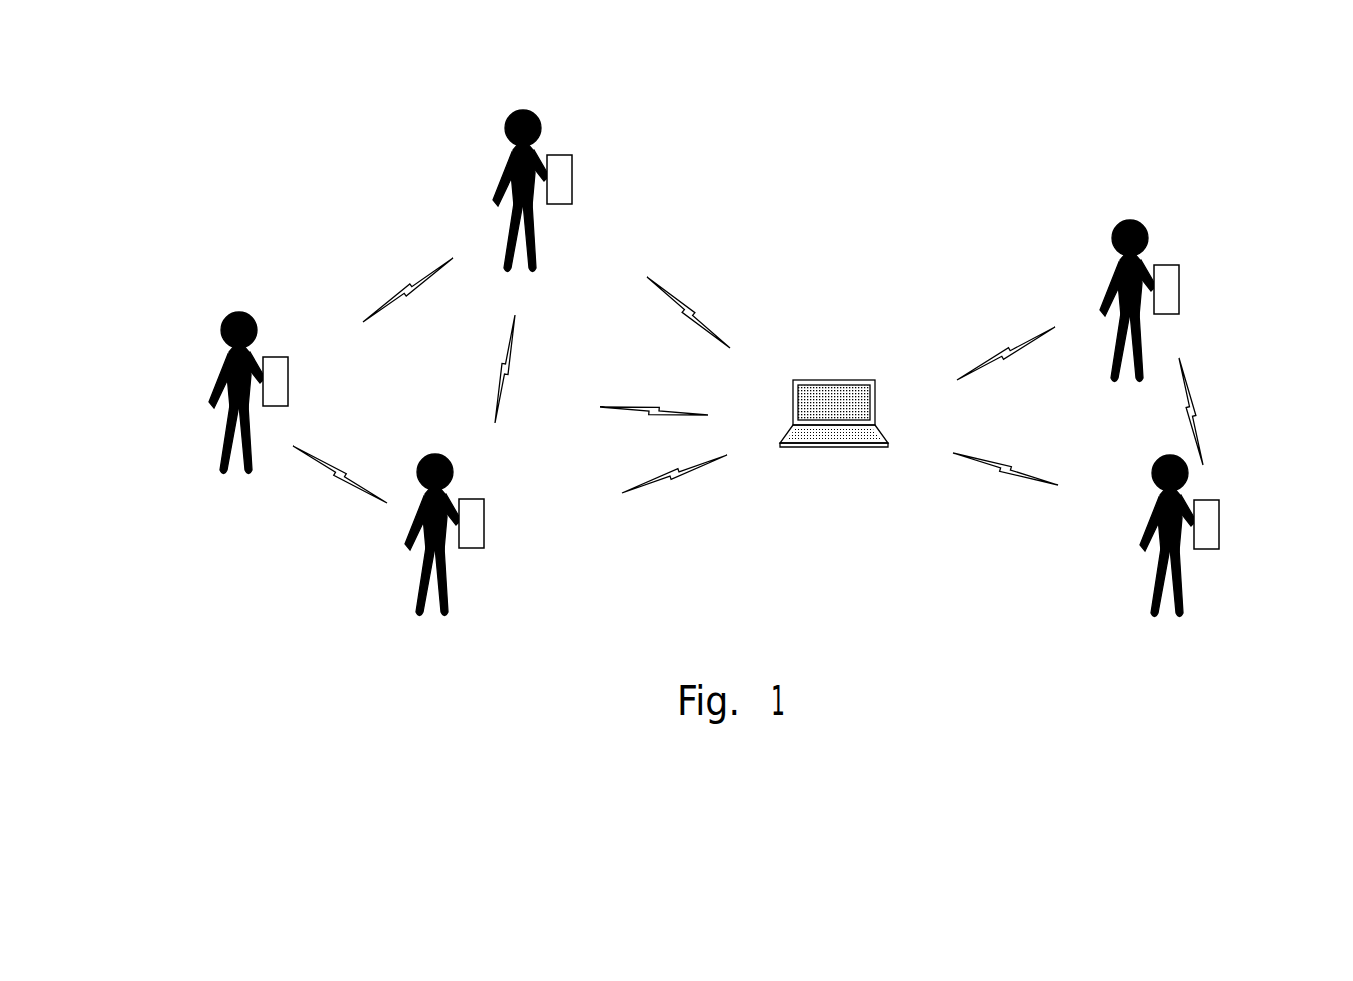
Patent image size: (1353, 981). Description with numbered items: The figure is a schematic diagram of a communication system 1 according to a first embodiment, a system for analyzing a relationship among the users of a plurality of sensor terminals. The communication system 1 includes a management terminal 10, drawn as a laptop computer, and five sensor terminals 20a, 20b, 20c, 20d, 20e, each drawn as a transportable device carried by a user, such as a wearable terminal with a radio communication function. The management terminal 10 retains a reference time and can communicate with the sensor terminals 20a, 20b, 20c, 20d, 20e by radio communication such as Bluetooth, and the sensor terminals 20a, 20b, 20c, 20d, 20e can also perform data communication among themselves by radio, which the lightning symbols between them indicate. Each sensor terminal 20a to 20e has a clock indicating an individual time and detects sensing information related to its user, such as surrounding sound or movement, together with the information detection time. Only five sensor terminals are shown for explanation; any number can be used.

The communication system 1 is at (277, 45).
The management terminal 10 is at (835, 380).
The sensor terminal 20a is at (286, 393).
The sensor terminal 20b is at (482, 535).
The sensor terminal 20c is at (570, 191).
The sensor terminal 20d is at (1217, 536).
The sensor terminal 20e is at (1177, 301).